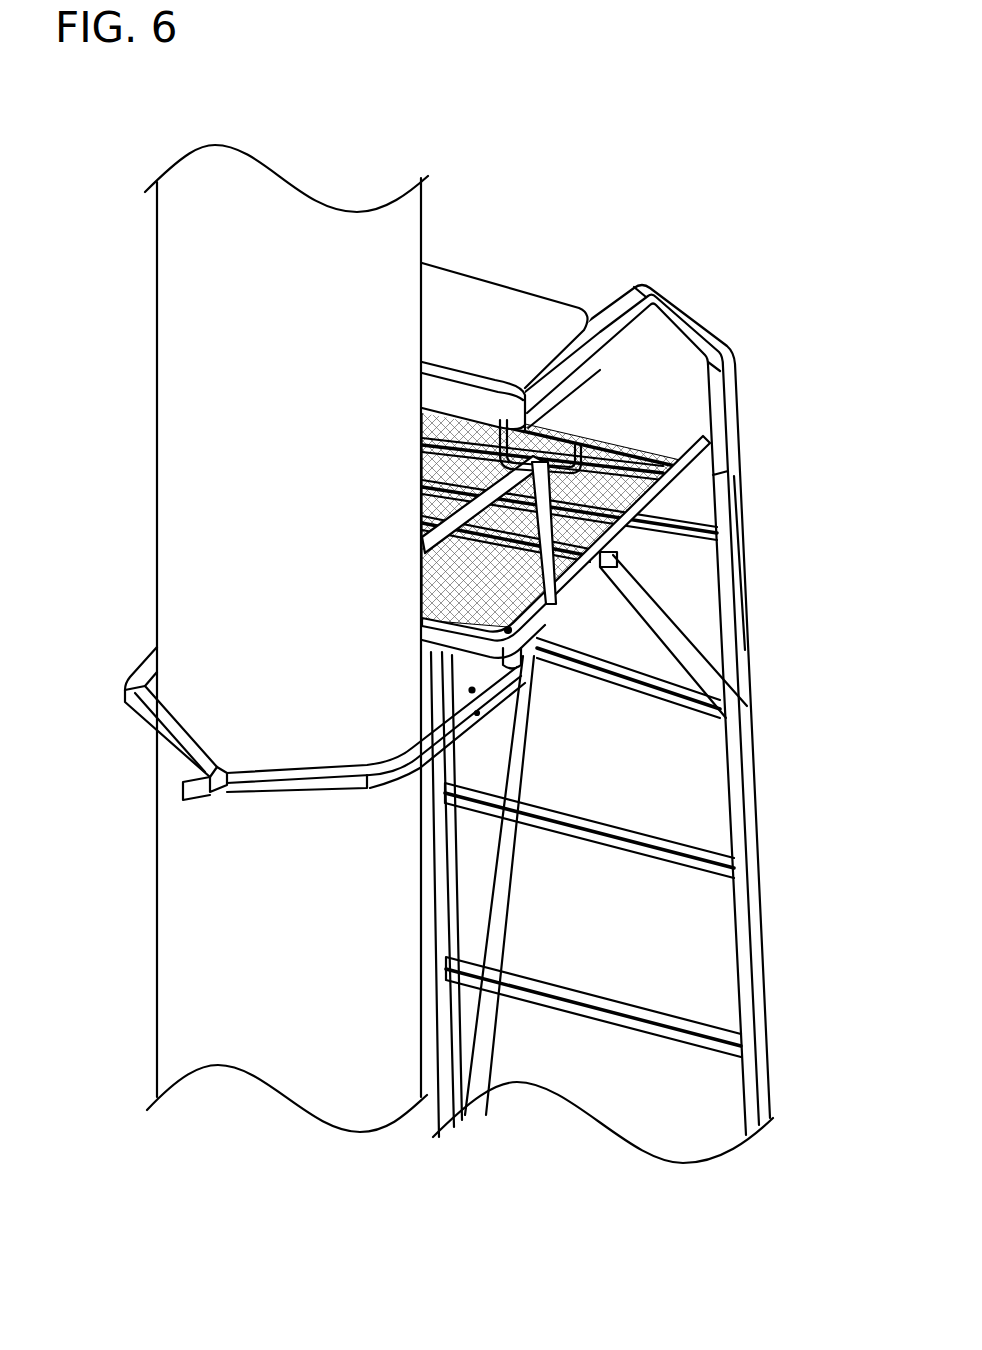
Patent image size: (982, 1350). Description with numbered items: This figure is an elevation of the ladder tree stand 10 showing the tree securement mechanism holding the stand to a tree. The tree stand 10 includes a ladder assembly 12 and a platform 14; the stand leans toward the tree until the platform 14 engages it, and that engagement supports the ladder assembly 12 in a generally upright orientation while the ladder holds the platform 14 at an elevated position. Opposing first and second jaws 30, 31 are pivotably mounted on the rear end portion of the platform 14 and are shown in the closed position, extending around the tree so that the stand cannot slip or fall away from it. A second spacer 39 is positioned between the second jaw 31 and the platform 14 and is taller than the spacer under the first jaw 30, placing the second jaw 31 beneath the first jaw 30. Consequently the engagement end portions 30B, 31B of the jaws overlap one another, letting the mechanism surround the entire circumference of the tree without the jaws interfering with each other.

The ladder tree stand 10 is at (443, 786).
The ladder assembly 12 is at (762, 885).
The platform 14 is at (630, 445).
The first jaw 30 is at (133, 710).
The engagement end portion of first jaw 30B is at (180, 751).
The second jaw 31 is at (383, 788).
The engagement end portion of second jaw 31B is at (243, 790).
The second spacer 39 is at (533, 653).